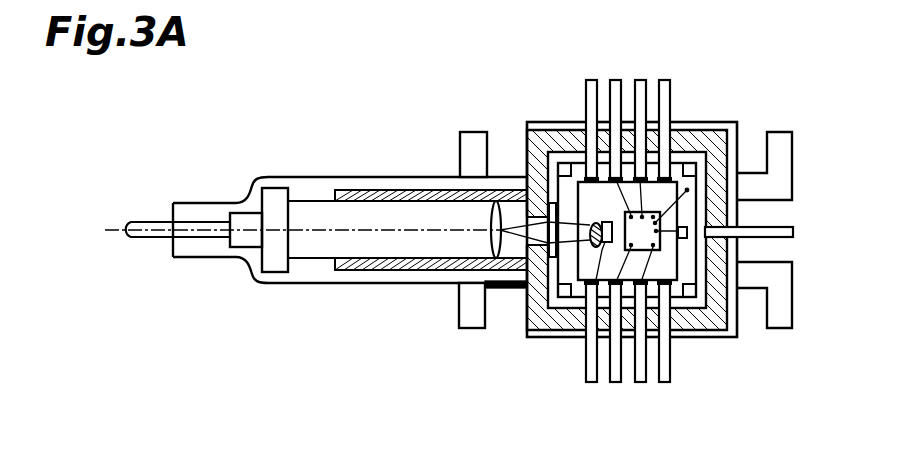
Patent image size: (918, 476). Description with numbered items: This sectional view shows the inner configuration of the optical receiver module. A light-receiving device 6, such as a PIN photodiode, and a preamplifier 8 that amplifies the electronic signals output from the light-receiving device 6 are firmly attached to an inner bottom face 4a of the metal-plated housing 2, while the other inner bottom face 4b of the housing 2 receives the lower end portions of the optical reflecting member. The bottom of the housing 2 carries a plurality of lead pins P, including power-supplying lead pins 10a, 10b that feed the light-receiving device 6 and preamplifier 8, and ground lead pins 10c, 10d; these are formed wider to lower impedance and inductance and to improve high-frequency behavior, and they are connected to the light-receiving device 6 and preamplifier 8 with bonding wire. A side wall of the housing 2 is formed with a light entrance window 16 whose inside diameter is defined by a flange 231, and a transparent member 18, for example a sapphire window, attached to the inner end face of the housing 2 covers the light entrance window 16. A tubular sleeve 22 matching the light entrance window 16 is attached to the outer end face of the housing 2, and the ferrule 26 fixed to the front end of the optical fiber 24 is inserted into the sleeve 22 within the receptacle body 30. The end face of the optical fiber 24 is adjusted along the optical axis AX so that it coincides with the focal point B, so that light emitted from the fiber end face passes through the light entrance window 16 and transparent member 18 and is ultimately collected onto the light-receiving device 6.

The housing 2 is at (710, 135).
The inner bottom face 4a is at (690, 298).
The other inner bottom face 4b is at (710, 300).
The light-receiving device 6 is at (600, 217).
The preamplifier 8 is at (675, 218).
The power-supplying lead pin 10a is at (785, 133).
The power-supplying lead pin 10b is at (786, 328).
The ground lead pin 10c is at (473, 132).
The ground lead pin 10d is at (471, 328).
The light entrance window 16 is at (508, 288).
The transparent member 18 is at (552, 258).
The tubular sleeve 22 is at (398, 194).
The optical fiber 24 is at (148, 221).
The ferrule 26 is at (316, 207).
The receptacle body 30 is at (277, 176).
The flange 231 is at (525, 165).
The focal point B is at (493, 212).
The lead pins P is at (678, 75).
The optical axis AX is at (286, 230).